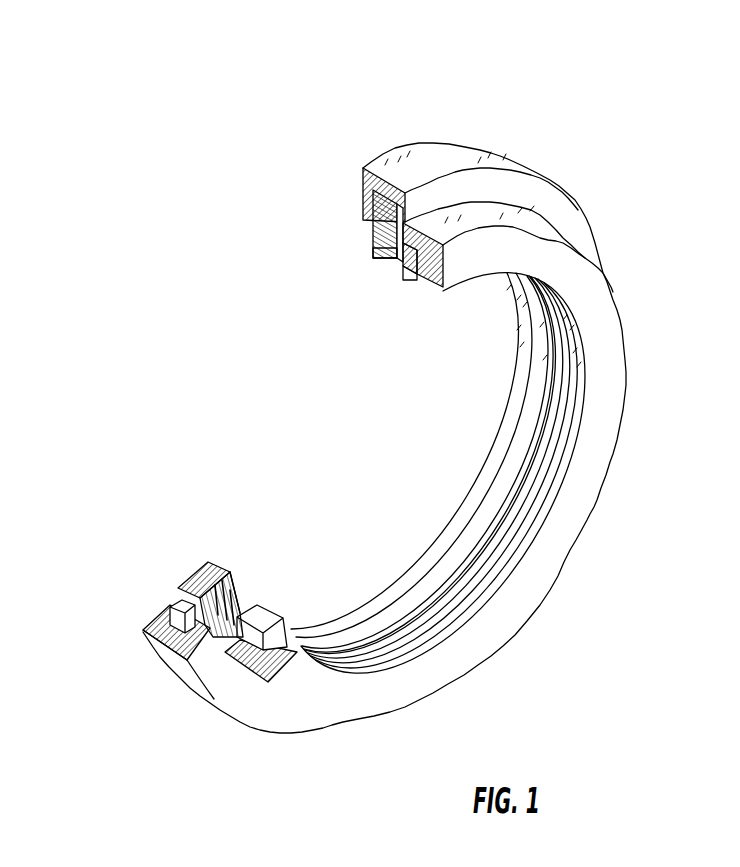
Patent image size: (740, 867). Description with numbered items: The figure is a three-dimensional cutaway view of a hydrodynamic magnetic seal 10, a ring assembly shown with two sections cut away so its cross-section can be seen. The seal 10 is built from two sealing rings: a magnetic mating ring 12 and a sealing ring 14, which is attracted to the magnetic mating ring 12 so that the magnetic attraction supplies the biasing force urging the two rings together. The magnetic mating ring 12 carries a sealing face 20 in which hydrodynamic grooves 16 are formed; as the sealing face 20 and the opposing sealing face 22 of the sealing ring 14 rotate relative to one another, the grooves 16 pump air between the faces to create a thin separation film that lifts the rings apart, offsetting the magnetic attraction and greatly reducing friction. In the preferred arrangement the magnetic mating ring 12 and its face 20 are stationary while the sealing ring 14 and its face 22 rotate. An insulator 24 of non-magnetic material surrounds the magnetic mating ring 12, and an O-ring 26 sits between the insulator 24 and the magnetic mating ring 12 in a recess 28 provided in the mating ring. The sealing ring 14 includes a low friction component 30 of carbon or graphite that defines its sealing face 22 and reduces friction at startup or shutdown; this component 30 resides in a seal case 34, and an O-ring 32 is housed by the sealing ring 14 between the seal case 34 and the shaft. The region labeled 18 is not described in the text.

The hydrodynamic magnetic seal 10 is at (444, 40).
The magnetic mating ring 12 is at (367, 247).
The sealing ring 14 is at (354, 520).
The hydrodynamic grooves 16 is at (229, 597).
The lip end portion 18 is at (400, 252).
The sealing face 20 is at (213, 567).
The sealing face 22 is at (403, 270).
The insulator 24 is at (568, 196).
The O-ring 26 is at (187, 660).
The recess 28 is at (140, 632).
The low friction component 30 is at (410, 283).
The O-ring 32 is at (262, 659).
The seal case 34 is at (570, 547).